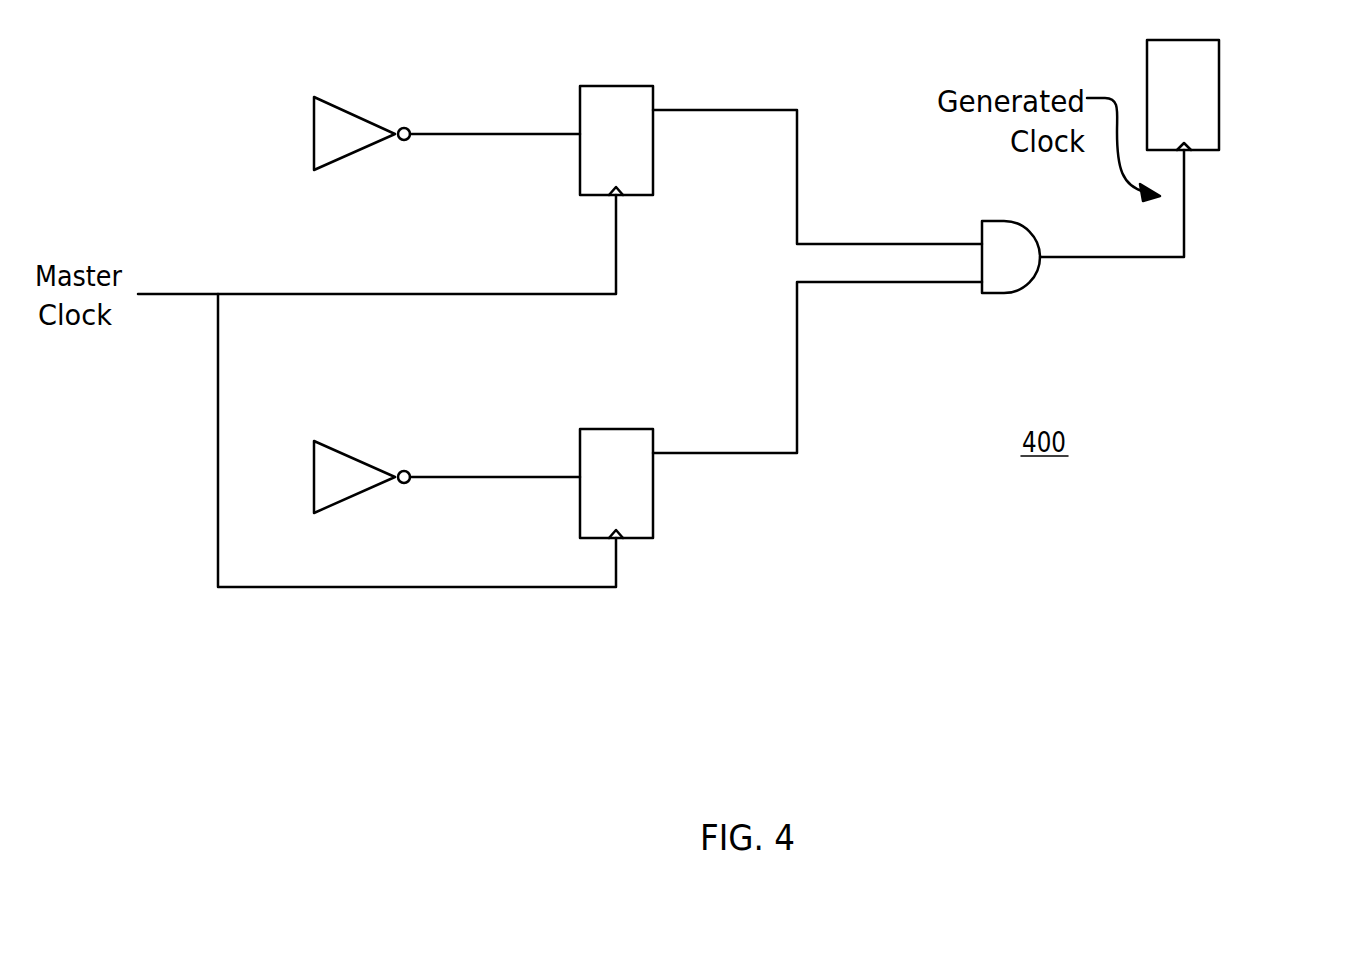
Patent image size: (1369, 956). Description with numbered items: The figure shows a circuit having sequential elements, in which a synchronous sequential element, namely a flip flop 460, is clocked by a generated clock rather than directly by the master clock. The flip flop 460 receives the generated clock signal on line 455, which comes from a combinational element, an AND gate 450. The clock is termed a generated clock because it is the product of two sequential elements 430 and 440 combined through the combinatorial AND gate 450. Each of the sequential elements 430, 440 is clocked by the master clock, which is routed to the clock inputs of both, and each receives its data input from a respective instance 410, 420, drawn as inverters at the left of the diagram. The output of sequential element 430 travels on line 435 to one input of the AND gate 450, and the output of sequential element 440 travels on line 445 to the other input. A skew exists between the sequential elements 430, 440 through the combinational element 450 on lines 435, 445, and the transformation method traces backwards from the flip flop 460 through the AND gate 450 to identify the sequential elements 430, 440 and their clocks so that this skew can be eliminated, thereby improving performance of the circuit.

The instance 410 is at (343, 158).
The instance 420 is at (362, 495).
The sequential element 430 is at (653, 168).
The line 435 is at (797, 150).
The sequential element 440 is at (653, 518).
The line 445 is at (797, 345).
The AND gate 450 is at (1015, 290).
The line 455 is at (1184, 197).
The flip flop 460 is at (1219, 100).